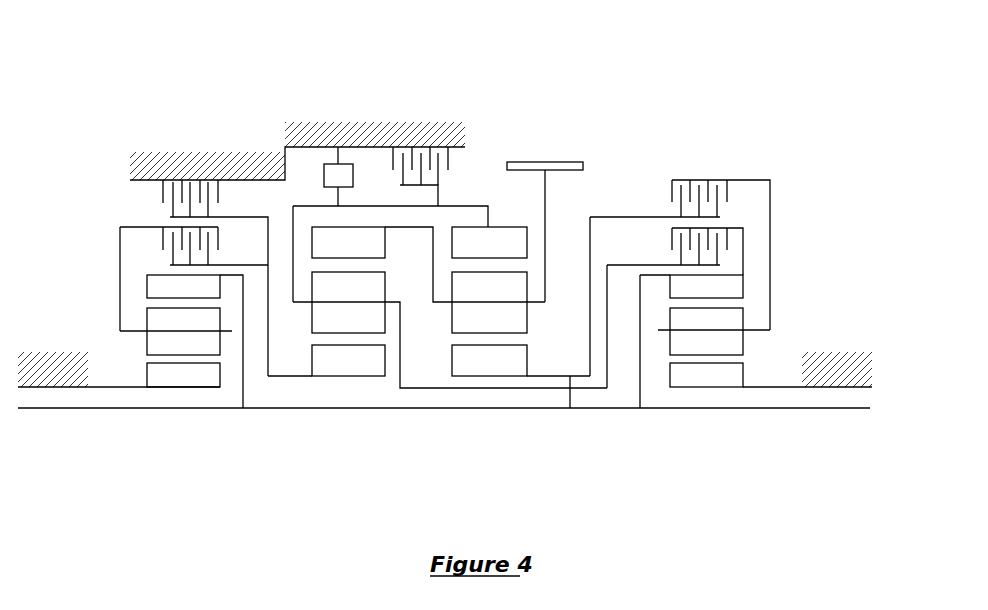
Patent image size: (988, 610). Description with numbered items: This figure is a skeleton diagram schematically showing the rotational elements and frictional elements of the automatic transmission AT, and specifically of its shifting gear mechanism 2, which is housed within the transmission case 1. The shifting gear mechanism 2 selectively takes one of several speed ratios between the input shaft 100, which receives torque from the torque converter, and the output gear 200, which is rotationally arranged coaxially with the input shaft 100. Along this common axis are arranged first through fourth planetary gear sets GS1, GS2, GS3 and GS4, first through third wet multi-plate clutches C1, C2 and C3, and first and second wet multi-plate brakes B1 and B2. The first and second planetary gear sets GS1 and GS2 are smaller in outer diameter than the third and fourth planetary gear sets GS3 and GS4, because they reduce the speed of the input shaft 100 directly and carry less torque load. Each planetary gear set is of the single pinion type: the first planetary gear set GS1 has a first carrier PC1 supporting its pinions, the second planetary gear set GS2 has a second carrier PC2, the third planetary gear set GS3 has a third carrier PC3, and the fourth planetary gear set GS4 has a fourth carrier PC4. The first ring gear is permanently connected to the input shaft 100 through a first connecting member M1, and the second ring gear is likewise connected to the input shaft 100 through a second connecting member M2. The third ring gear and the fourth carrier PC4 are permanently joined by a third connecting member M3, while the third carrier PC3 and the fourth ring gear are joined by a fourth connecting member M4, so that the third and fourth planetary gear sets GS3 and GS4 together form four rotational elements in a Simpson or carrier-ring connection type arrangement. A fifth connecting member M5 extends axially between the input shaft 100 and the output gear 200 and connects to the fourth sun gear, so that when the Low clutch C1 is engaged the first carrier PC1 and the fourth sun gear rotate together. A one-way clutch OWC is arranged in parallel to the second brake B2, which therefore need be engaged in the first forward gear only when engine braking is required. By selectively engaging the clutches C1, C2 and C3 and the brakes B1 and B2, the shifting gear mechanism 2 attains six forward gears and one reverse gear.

The automatic transmission AT is at (724, 84).
The shifting gear mechanism 2 is at (634, 112).
The transmission case 1 is at (236, 180).
The first brake B1 is at (163, 190).
The second brake B2 is at (393, 158).
The first clutch C1 is at (727, 192).
The second clutch C2 is at (727, 238).
The third clutch C3 is at (163, 237).
The one-way clutch OWC is at (353, 178).
The first planetary gear set GS1 is at (707, 399).
The second planetary gear set GS2 is at (182, 399).
The third planetary gear set GS3 is at (347, 387).
The fourth planetary gear set GS4 is at (490, 387).
The first carrier PC1 is at (767, 331).
The second carrier PC2 is at (120, 332).
The third carrier PC3 is at (418, 297).
The fourth carrier PC4 is at (537, 303).
The first connecting member M1 is at (640, 397).
The second connecting member M2 is at (243, 397).
The third connecting member M3 is at (433, 262).
The fourth connecting member M4 is at (476, 198).
The fifth connecting member M5 is at (570, 410).
The input shaft 100 is at (755, 409).
The output gear 200 is at (513, 160).